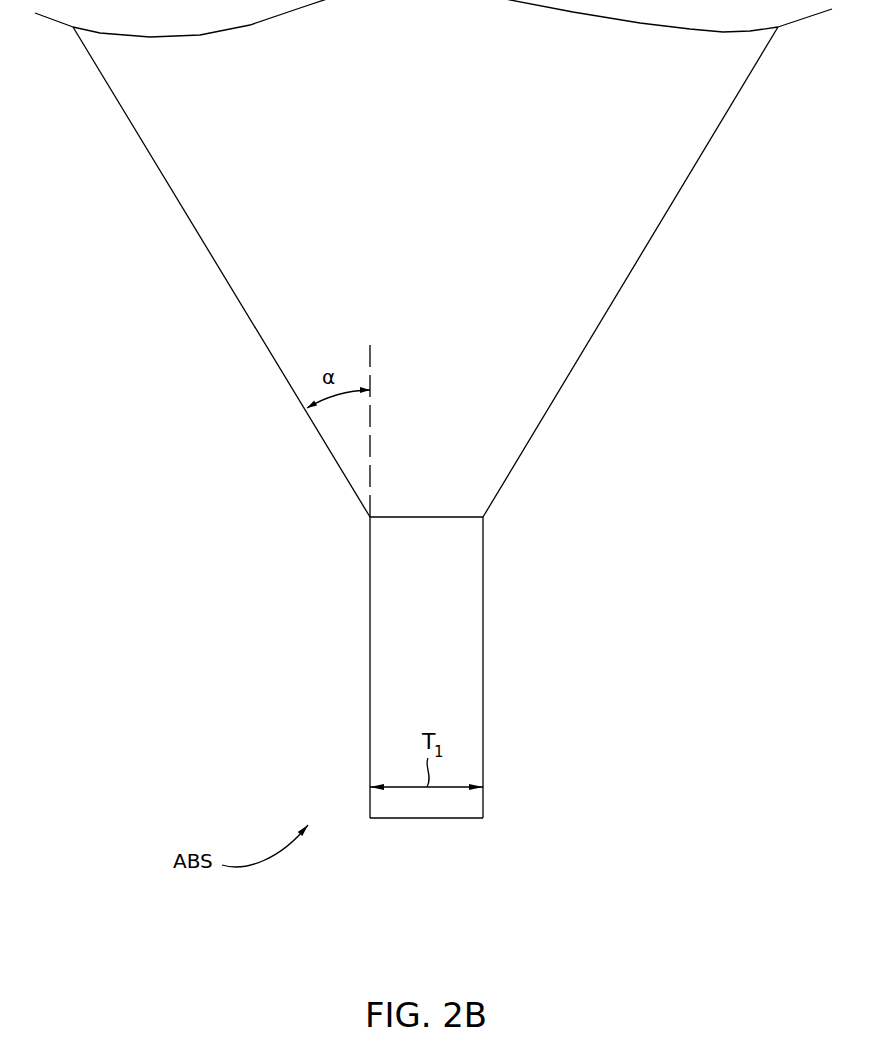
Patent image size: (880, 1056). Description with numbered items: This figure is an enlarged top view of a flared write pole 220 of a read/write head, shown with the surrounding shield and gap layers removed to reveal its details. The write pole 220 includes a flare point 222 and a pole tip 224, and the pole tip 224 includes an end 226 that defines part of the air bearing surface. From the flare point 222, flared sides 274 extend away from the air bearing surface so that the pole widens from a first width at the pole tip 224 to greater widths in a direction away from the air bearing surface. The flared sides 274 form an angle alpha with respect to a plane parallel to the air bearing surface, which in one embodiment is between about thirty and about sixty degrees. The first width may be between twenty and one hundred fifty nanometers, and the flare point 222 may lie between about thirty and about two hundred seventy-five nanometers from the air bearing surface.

The write pole 220 is at (433, 258).
The flare point 222 is at (437, 518).
The pole tip 224 is at (462, 692).
The end 226 is at (443, 818).
The flared sides 274 is at (243, 308).